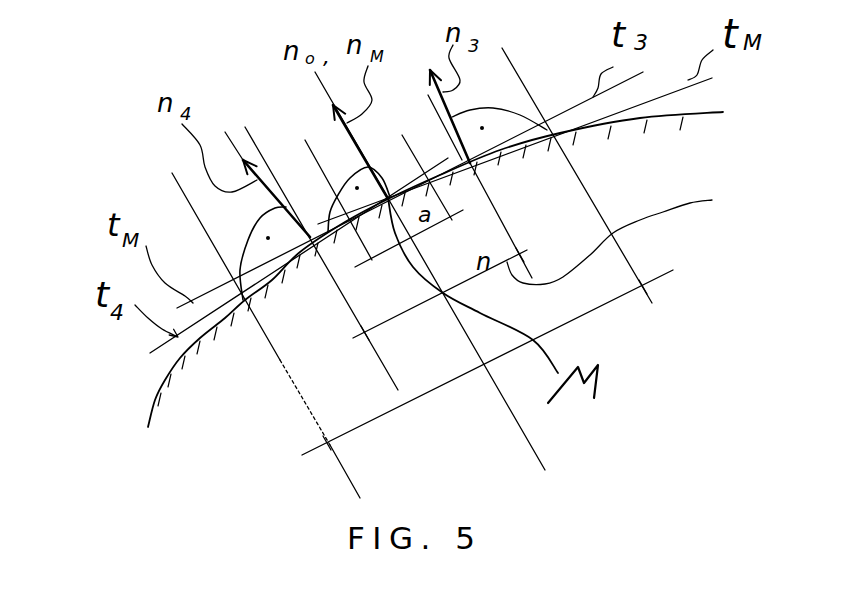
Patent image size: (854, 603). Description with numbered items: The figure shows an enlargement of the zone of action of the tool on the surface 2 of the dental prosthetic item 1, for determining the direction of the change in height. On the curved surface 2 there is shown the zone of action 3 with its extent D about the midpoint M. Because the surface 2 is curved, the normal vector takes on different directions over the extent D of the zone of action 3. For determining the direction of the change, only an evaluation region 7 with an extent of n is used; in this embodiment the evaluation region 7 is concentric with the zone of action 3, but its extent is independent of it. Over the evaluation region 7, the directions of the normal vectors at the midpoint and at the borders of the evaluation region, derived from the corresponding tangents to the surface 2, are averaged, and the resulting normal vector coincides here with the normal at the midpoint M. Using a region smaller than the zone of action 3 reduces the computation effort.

The dental prosthetic item 1 is at (232, 415).
The surface 2 is at (37, 398).
The zone of action 3 is at (668, 273).
The evaluation region 7 is at (738, 214).